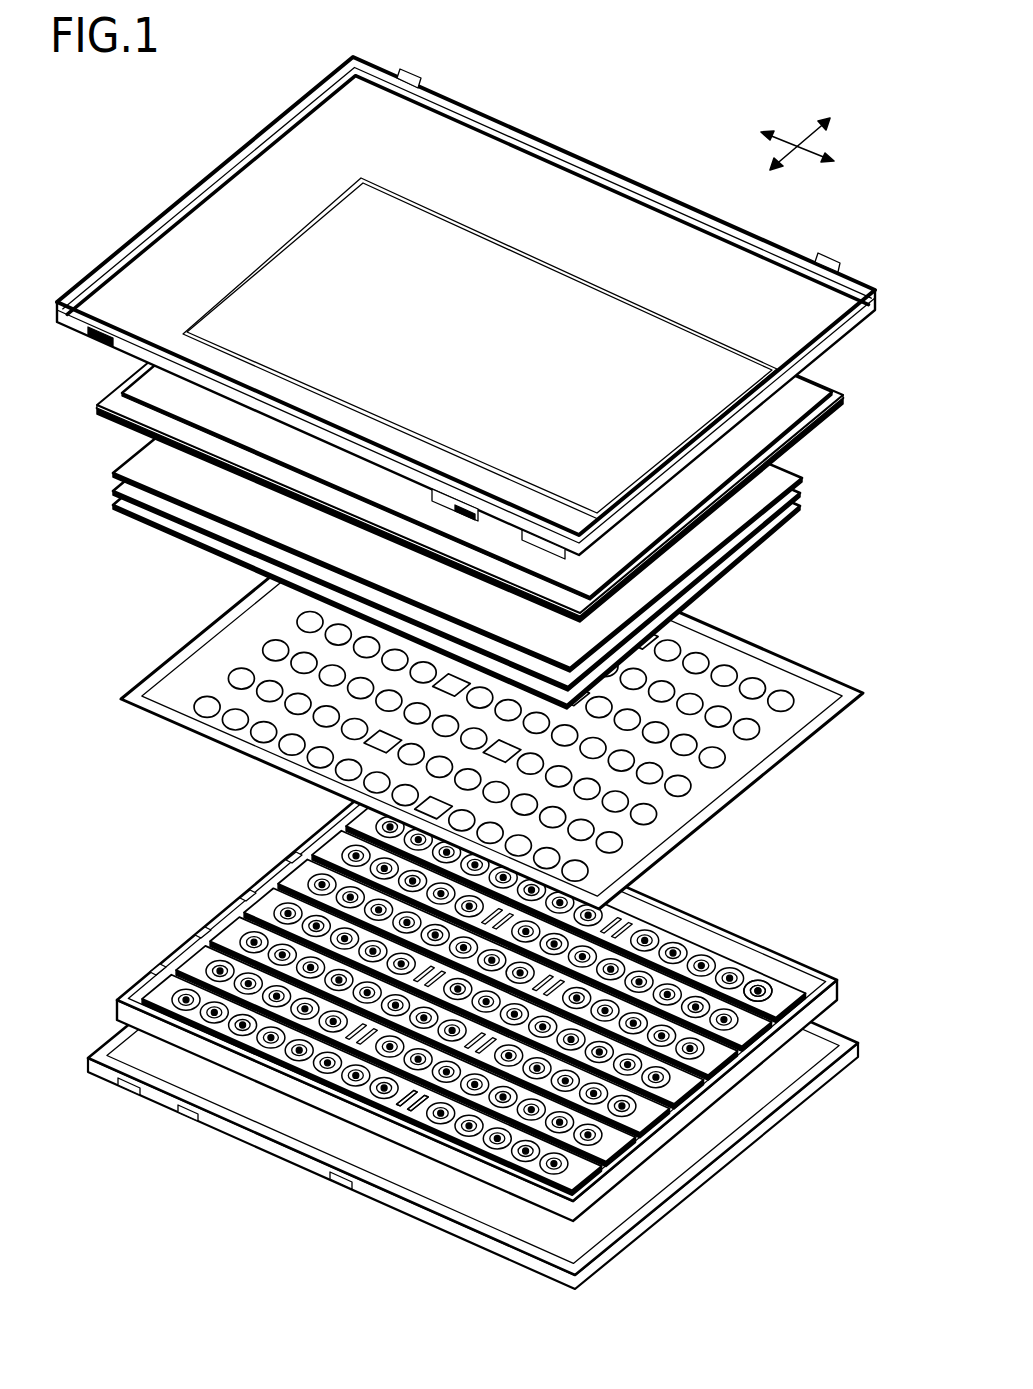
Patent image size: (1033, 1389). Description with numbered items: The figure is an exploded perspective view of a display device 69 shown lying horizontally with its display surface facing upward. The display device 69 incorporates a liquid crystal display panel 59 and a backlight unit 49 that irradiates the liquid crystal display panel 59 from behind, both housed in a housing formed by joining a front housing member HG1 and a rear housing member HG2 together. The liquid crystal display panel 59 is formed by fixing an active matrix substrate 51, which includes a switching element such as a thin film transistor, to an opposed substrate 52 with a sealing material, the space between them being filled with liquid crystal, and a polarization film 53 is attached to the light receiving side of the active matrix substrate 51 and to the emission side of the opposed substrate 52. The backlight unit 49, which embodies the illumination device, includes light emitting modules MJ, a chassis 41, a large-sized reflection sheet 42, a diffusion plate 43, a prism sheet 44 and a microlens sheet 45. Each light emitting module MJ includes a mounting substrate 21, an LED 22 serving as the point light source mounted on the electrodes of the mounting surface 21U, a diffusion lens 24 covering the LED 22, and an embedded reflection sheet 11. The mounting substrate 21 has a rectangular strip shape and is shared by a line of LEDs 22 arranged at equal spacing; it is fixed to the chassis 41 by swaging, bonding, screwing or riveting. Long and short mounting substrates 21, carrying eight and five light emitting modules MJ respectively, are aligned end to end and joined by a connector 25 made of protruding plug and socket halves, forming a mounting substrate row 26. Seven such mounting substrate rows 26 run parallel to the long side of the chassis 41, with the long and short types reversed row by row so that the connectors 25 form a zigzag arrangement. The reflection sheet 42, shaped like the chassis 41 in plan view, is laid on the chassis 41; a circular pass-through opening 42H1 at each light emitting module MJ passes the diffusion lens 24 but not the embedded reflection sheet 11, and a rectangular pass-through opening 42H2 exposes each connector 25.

The display device 69 is at (196, 150).
The front housing member HG1 is at (85, 285).
The rear housing member HG2 is at (87, 1064).
The liquid crystal display panel 59 is at (88, 350).
The opposed substrate 52 is at (123, 392).
The active matrix substrate 51 is at (116, 394).
The polarization film 53 is at (140, 436).
The backlight unit 49 is at (88, 449).
The microlens sheet 45 is at (118, 474).
The prism sheet 44 is at (118, 493).
The diffusion plate 43 is at (120, 509).
The reflection sheet 42 is at (150, 668).
The circular pass-through opening 42H1 is at (268, 646).
The rectangular pass-through opening 42H2 is at (410, 810).
The chassis 41 is at (115, 1000).
The mounting substrate 21 is at (832, 979).
The mounting surface 21U is at (794, 999).
The LED 22 is at (764, 988).
The diffusion lens 24 is at (762, 988).
The embedded reflection sheet 11 is at (788, 993).
The light emitting module MJ is at (877, 963).
The connector 25 is at (414, 1105).
The mounting substrate row 26 is at (596, 1176).